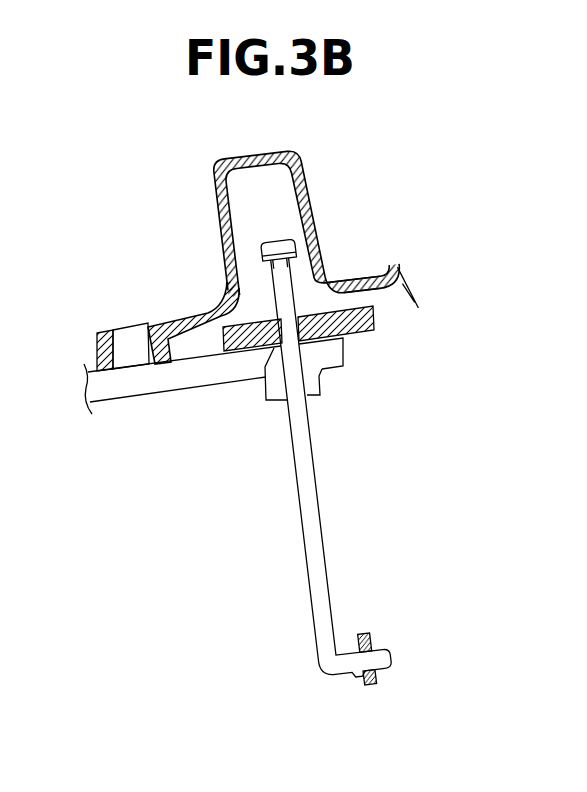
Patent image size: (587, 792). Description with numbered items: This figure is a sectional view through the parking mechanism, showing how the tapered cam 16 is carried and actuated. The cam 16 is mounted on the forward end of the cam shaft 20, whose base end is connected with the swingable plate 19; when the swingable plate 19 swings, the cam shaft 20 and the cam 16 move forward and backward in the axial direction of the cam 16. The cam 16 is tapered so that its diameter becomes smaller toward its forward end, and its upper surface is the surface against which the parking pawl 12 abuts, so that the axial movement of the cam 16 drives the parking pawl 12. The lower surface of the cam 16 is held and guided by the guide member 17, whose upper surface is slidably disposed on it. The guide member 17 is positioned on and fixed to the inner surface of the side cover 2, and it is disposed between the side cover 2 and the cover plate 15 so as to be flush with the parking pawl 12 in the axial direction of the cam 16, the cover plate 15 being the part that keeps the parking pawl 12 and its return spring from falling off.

The side cover 2 is at (317, 186).
The parking pawl 12 is at (256, 323).
The cover plate 15 is at (192, 389).
The cam 16 is at (328, 377).
The guide member 17 is at (333, 302).
The swingable plate 19 is at (375, 642).
The cam shaft 20 is at (317, 483).